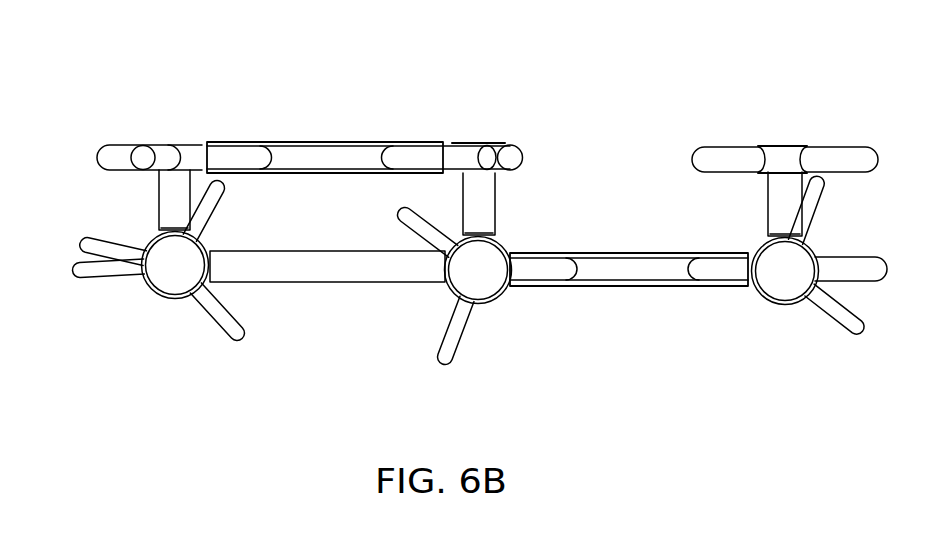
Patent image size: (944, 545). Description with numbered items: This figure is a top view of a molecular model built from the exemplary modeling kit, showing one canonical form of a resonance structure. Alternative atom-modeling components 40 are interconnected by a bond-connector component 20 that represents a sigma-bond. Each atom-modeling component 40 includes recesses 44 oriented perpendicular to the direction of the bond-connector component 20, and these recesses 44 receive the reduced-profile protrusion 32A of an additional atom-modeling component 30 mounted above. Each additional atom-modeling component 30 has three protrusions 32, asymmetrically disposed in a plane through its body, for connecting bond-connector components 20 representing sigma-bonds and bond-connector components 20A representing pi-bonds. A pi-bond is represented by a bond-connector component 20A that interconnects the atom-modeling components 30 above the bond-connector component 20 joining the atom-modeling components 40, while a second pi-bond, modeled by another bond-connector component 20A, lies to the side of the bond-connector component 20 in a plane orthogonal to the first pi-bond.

The bond-connector component 20 is at (315, 282).
The bond-connector component 20A is at (357, 141).
The atom-modeling component 30 is at (175, 143).
The protrusion 32 is at (97, 156).
The protrusion 32A is at (158, 200).
The atom-modeling component 40 is at (155, 300).
The recess 44 is at (463, 230).